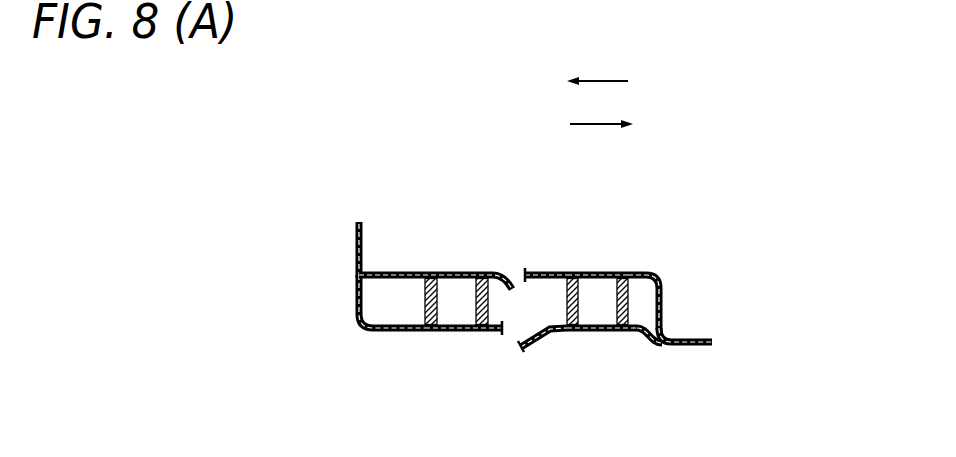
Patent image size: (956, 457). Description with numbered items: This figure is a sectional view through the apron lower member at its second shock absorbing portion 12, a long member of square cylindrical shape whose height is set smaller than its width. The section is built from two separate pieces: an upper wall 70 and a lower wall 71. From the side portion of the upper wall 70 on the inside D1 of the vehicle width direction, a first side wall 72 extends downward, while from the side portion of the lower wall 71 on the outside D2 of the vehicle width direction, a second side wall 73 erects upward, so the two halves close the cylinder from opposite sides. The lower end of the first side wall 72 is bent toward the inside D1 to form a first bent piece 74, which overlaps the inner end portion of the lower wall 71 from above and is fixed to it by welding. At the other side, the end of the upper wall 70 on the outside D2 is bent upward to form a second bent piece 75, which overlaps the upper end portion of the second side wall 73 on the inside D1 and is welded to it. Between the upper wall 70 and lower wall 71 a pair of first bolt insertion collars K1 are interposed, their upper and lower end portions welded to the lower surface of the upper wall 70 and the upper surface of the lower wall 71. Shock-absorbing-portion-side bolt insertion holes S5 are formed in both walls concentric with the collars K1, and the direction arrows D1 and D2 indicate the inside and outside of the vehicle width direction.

The second shock absorbing portion 12 is at (314, 212).
The upper wall 70 is at (507, 263).
The lower wall 71 is at (565, 349).
The first side wall 72 is at (691, 294).
The second side wall 73 is at (338, 287).
The first bent piece 74 is at (697, 338).
The second bent piece 75 is at (366, 224).
The shock-absorbing-portion-side bolt insertion hole S5 is at (475, 272).
The first bolt insertion collar K1 is at (426, 298).
The inside of the width direction of the vehicle D1 is at (620, 127).
The outside of the width direction of the vehicle D2 is at (619, 75).